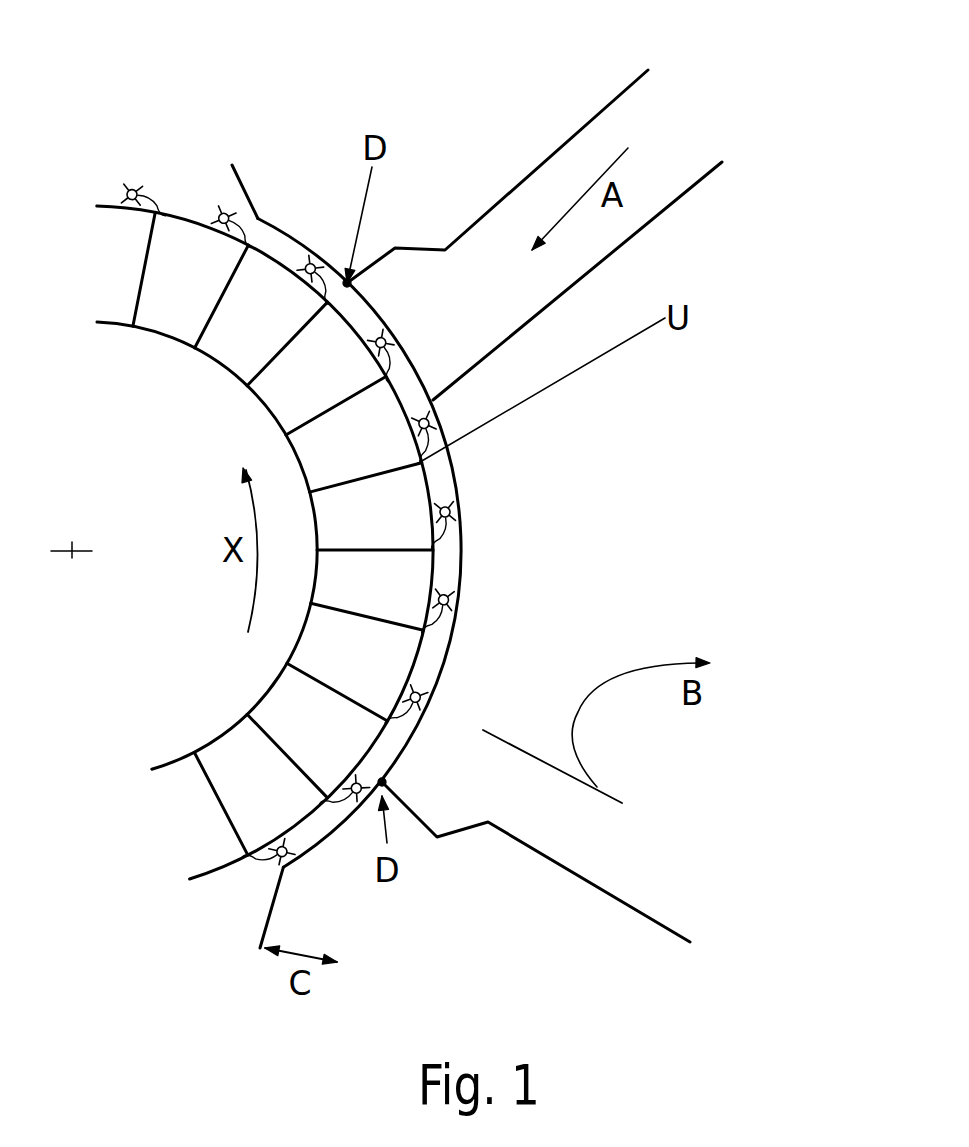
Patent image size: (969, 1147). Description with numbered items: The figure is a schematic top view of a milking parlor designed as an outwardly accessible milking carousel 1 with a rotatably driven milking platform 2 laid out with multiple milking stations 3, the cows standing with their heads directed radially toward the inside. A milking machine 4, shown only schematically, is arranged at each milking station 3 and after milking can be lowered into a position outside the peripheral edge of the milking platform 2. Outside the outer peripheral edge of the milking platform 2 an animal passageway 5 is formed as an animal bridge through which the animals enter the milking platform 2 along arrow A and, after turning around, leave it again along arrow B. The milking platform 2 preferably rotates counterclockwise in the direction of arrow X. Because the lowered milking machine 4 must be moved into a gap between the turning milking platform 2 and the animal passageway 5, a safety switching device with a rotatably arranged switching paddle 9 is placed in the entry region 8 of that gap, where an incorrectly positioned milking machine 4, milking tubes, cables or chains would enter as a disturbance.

The milking carousel 1 is at (307, 193).
The milking platform 2 is at (195, 878).
The milking station 3 is at (393, 488).
The milking machine 4 is at (463, 508).
The animal passageway 5 is at (567, 138).
The entry region 8 is at (262, 863).
The switching paddle 9 is at (268, 223).